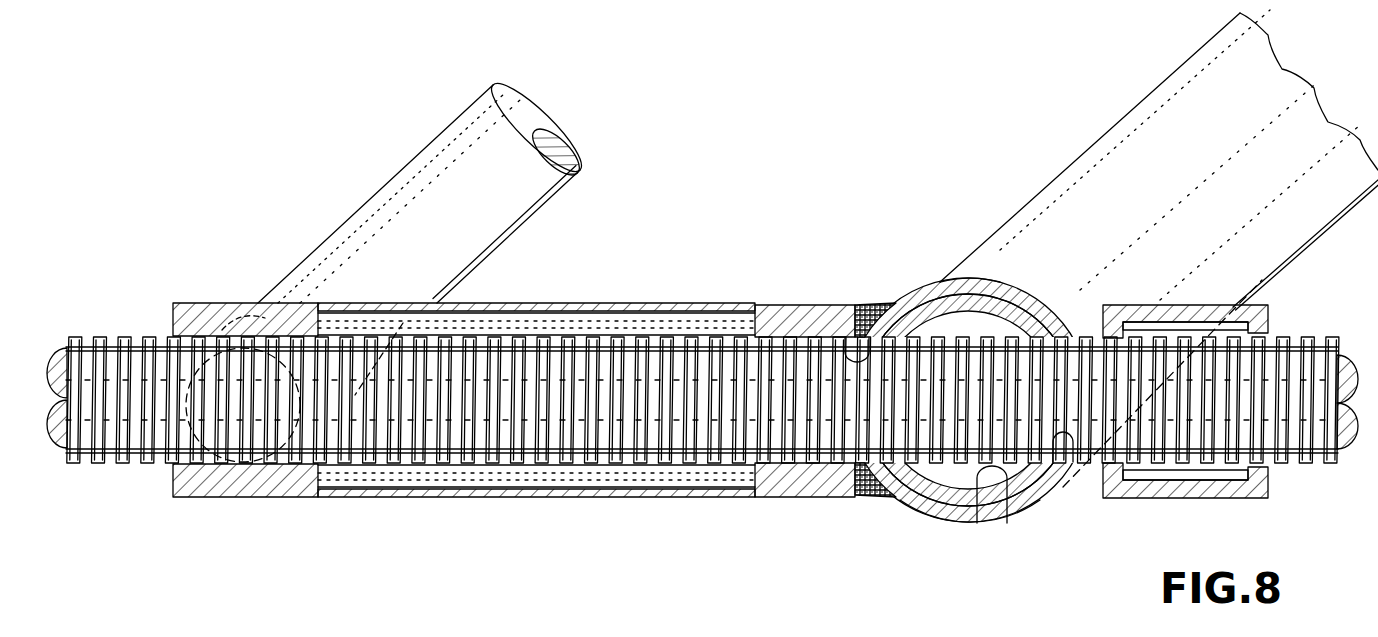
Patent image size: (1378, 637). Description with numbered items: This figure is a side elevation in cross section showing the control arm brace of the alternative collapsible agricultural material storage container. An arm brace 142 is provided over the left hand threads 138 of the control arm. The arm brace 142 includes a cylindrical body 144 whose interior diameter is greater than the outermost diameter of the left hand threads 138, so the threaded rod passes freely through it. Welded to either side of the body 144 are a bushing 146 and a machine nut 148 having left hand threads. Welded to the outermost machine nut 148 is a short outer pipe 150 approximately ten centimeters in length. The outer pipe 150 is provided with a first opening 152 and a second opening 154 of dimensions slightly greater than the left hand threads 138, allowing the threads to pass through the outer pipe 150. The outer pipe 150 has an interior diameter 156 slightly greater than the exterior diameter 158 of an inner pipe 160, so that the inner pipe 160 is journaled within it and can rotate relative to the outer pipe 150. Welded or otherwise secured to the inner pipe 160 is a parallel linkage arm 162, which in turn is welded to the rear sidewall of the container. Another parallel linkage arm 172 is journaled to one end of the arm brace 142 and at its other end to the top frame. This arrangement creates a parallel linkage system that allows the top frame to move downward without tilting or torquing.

The left hand threads 138 is at (581, 345).
The arm brace 142 is at (508, 286).
The cylindrical body 144 is at (678, 305).
The bushing 146 is at (197, 307).
The machine nut 148 is at (810, 308).
The outer pipe 150 is at (913, 305).
The first opening 152 is at (842, 337).
The second opening 154 is at (1073, 458).
The interior diameter 156 is at (1017, 507).
The exterior diameter 158 is at (992, 523).
The inner pipe 160 is at (962, 305).
The parallel linkage arm 162 is at (1030, 240).
The parallel linkage arm 172 is at (333, 248).